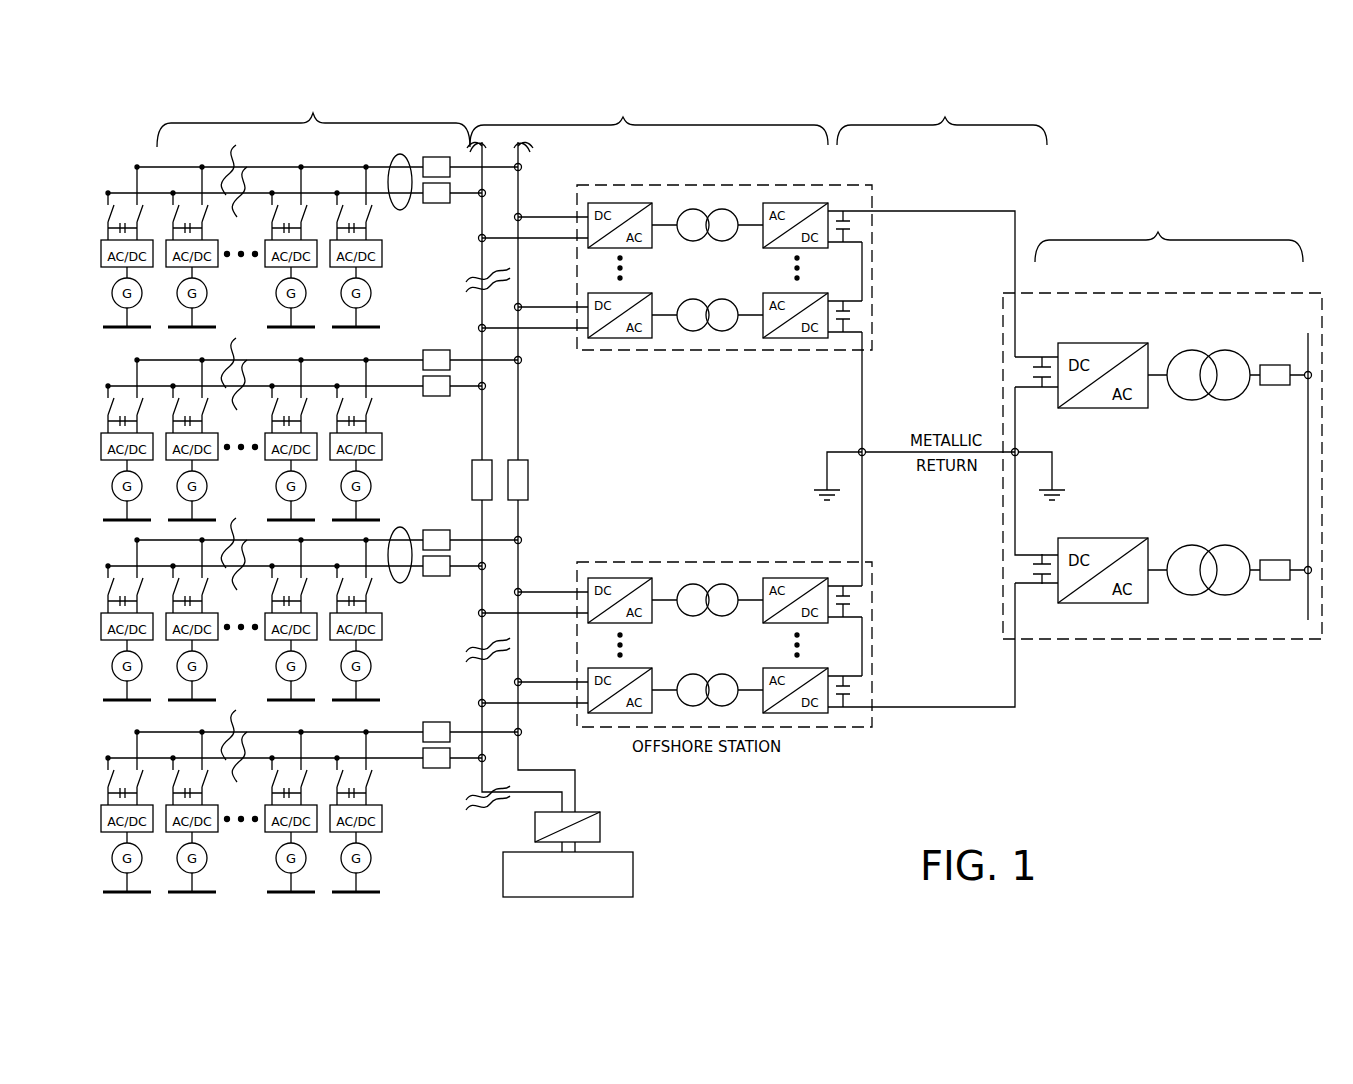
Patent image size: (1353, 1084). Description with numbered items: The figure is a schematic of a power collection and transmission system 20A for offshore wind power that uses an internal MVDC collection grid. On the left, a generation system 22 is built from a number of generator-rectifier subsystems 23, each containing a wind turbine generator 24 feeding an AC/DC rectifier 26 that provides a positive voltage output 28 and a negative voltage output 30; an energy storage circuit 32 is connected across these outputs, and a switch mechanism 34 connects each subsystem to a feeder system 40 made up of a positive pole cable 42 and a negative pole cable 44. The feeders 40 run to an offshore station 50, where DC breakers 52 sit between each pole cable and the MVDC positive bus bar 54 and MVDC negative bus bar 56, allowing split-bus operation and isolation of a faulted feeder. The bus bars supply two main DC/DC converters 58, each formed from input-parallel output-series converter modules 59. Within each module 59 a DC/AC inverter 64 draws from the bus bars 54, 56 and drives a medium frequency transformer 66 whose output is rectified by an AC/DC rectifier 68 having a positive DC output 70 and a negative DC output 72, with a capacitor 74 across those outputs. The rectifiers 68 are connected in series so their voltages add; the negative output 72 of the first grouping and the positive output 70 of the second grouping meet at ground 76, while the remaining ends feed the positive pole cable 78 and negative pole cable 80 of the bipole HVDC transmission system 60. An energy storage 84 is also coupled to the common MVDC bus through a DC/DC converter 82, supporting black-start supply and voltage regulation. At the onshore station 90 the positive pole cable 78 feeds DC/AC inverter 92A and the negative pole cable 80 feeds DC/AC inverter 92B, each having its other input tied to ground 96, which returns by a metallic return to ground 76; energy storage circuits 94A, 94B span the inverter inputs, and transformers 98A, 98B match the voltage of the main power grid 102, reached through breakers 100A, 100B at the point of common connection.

The power collection and transmission system 20A is at (1125, 192).
The generation system 22 is at (313, 118).
The generator-rectifier subsystem 23 is at (100, 668).
The wind turbine generator 24 is at (140, 302).
The AC/DC rectifier 26 is at (130, 237).
The positive voltage output 28 is at (378, 234).
The negative voltage output 30 is at (112, 236).
The energy storage circuit 32 is at (128, 428).
The switch mechanism 34 is at (108, 223).
The feeder system 40 is at (402, 154).
The positive pole cable 42 is at (388, 360).
The negative pole cable 44 is at (386, 386).
The offshore station 50 is at (624, 118).
The DC breaker 52 is at (530, 472).
The MVDC positive bus bar 54 is at (522, 158).
The MVDC negative bus bar 56 is at (486, 155).
The main DC/DC converter 58 is at (875, 328).
The IPOS converter module 59 is at (694, 458).
The HVDC transmission system 60 is at (940, 118).
The DC/AC inverter 64 is at (605, 340).
The medium frequency transformer 66 is at (724, 332).
The AC/DC rectifier 68 is at (795, 340).
The positive DC output 70 is at (836, 204).
The negative DC output 72 is at (858, 279).
The capacitor 74 is at (855, 222).
The ground 76 is at (862, 450).
The positive pole cable 78 is at (1012, 215).
The negative pole cable 80 is at (945, 706).
The DC/DC converter 82 is at (600, 812).
The energy storage 84 is at (633, 852).
The onshore station 90 is at (1157, 230).
The DC/AC inverter 92A is at (1070, 342).
The DC/AC inverter 92B is at (1083, 538).
The energy storage circuit 94A is at (1035, 372).
The energy storage circuit 94B is at (1040, 566).
The ground 96 is at (1018, 448).
The transformer 98A is at (1217, 400).
The transformer 98B is at (1197, 545).
The breaker 100A is at (1273, 365).
The breaker 100B is at (1275, 562).
The main power grid 102 is at (1308, 430).